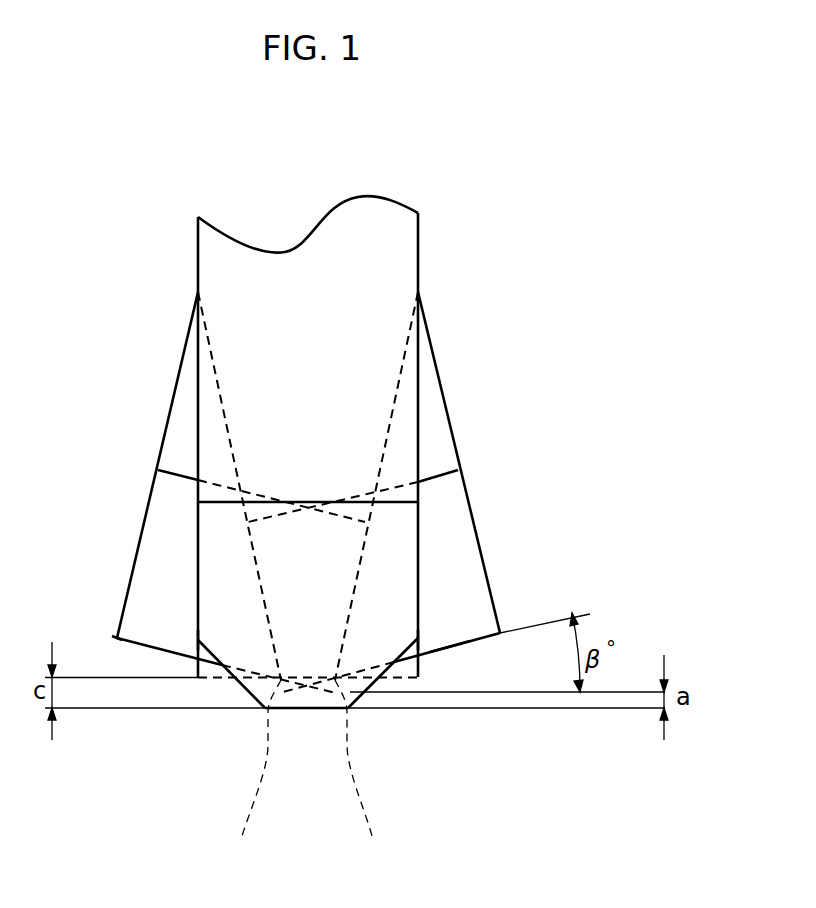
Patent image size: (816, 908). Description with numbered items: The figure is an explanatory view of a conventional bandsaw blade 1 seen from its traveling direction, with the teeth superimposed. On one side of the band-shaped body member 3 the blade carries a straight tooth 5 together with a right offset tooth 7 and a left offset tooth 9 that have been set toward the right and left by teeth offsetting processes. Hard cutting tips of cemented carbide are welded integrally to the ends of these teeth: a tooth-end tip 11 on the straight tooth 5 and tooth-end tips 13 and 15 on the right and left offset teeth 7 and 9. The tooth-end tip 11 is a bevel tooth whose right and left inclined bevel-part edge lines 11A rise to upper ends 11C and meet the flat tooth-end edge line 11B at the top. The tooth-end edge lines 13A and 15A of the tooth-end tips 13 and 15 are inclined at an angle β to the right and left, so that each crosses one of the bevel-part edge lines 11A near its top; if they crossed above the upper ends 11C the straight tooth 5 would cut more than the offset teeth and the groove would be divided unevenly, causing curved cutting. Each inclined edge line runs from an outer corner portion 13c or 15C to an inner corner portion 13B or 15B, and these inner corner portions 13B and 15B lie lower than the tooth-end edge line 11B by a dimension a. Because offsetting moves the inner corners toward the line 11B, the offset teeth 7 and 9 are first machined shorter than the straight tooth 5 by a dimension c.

The bandsaw blade 1 is at (515, 182).
The band-shaped body member 3 is at (410, 246).
The straight tooth 5 is at (406, 396).
The right offset tooth 7 is at (438, 426).
The left offset tooth 9 is at (178, 438).
The tooth-end tip 11 is at (402, 562).
The bevel-part edge lines 11A is at (240, 684).
The tooth-end edge line 11B is at (294, 709).
The upper ends 11C is at (198, 642).
The tooth-end tip 13 is at (467, 564).
The tooth-end edge line 13A is at (448, 650).
The inner corner portion 13B is at (249, 775).
The outer corner portion 13c is at (500, 632).
The tooth-end tip 15 is at (153, 540).
The tooth-end edge line 15A is at (126, 612).
The inner corner portion 15B is at (368, 775).
The outer corner portion 15C is at (114, 638).